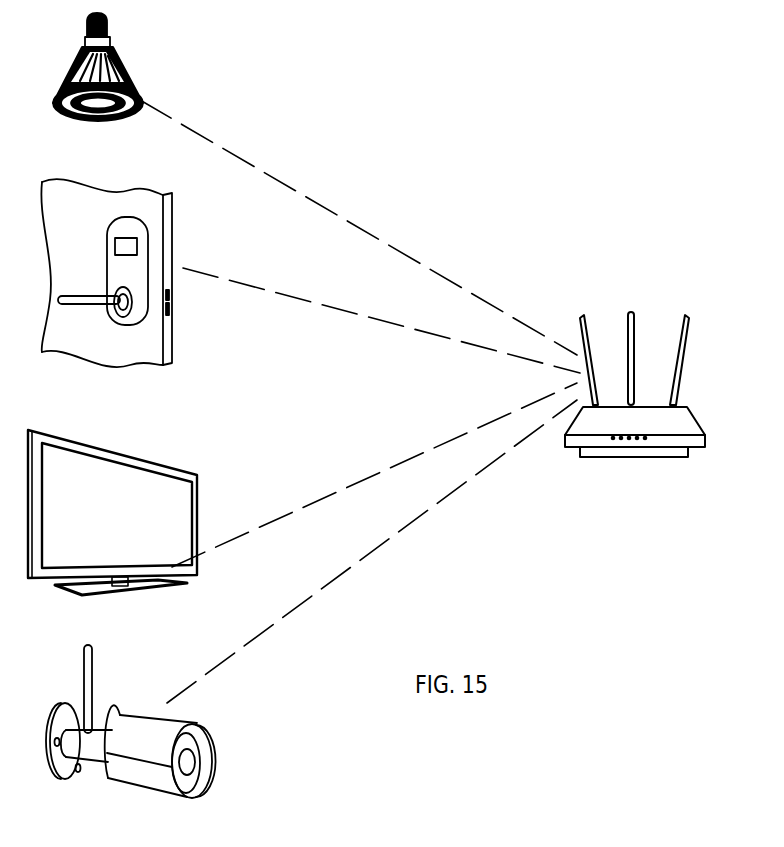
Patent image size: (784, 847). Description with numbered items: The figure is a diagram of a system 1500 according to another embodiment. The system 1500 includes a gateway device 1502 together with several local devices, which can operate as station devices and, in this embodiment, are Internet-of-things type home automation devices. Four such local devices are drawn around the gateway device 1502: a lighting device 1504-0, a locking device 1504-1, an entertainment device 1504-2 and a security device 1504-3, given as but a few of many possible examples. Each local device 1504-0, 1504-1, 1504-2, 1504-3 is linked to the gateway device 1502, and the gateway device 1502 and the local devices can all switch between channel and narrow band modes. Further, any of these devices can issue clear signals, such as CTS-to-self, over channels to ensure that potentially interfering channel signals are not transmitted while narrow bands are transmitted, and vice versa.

The system 1500 is at (632, 150).
The gateway device 1502 is at (658, 384).
The lighting device 1504-0 is at (107, 50).
The locking device 1504-1 is at (143, 257).
The entertainment device 1504-2 is at (115, 480).
The security device 1504-3 is at (143, 777).